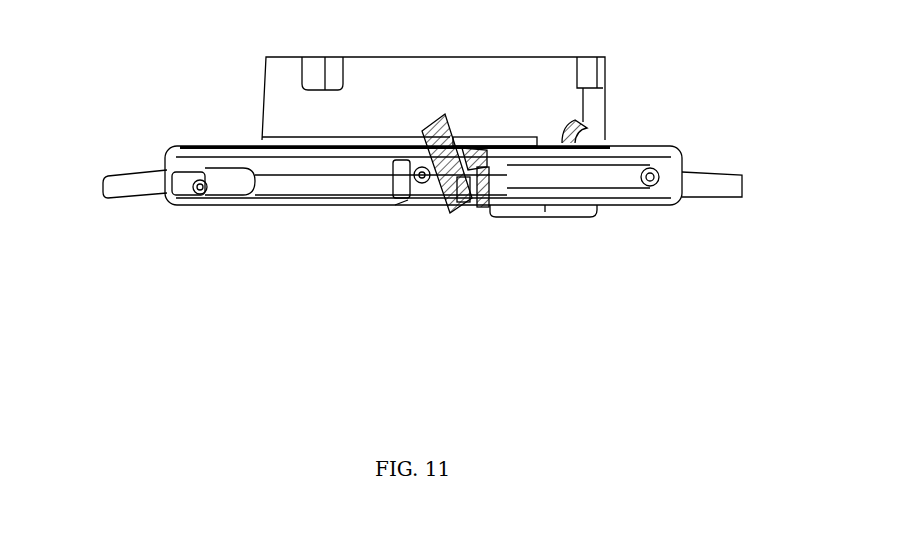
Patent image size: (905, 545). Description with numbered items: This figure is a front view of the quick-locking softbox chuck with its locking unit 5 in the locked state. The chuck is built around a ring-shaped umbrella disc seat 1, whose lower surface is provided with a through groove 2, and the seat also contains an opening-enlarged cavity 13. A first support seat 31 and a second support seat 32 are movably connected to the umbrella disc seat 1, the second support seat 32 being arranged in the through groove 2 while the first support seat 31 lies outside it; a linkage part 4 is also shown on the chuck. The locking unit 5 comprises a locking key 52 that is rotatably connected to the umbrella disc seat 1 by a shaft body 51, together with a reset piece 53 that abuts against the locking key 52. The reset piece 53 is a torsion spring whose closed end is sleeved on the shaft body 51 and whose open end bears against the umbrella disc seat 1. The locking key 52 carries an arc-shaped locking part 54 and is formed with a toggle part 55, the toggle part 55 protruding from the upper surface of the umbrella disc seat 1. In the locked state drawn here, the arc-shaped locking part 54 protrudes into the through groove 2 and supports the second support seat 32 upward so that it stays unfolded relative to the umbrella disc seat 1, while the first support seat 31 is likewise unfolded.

The umbrella disc seat 1 is at (222, 150).
The through groove 2 is at (408, 200).
The linkage part 4 is at (602, 177).
The locking unit 5 is at (583, 126).
The opening-enlarged cavity 13 is at (183, 196).
The first support seat 31 is at (135, 185).
The second support seat 32 is at (410, 168).
The shaft body 51 is at (478, 212).
The locking key 52 is at (430, 200).
The reset piece 53 is at (487, 195).
The arc-shaped locking part 54 is at (450, 175).
The toggle part 55 is at (437, 117).